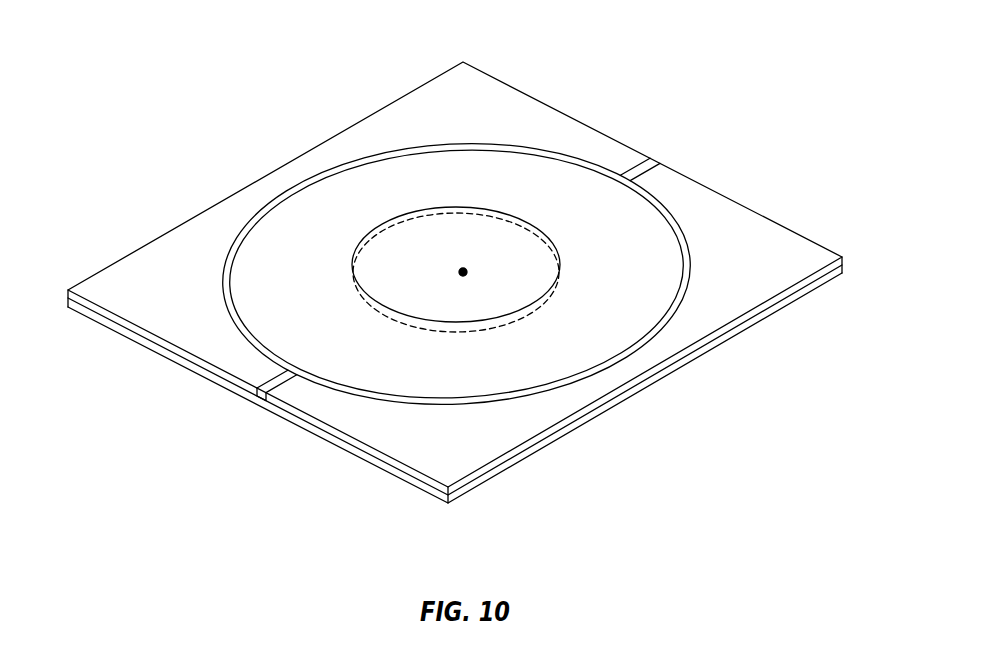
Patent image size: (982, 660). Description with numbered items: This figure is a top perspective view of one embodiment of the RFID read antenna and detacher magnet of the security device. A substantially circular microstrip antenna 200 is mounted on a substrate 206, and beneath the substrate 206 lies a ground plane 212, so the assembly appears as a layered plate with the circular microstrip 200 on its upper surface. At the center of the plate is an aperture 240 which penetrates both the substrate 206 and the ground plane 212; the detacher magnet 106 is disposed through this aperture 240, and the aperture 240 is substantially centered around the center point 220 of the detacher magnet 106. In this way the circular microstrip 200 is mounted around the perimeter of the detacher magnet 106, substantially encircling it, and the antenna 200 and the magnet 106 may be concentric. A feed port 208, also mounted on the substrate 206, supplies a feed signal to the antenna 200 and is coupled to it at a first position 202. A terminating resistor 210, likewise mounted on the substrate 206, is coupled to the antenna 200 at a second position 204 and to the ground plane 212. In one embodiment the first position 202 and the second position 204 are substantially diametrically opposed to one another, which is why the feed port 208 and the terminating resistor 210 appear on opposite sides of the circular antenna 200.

The RFID read antenna 200 is at (228, 248).
The first position 202 is at (621, 182).
The second position 204 is at (288, 368).
The substrate 206 is at (477, 443).
The feed port 208 is at (652, 157).
The terminating resistor 210 is at (255, 395).
The ground plane 212 is at (333, 444).
The center point 220 is at (466, 272).
The aperture 240 is at (562, 272).
The detacher magnet 106 is at (537, 282).